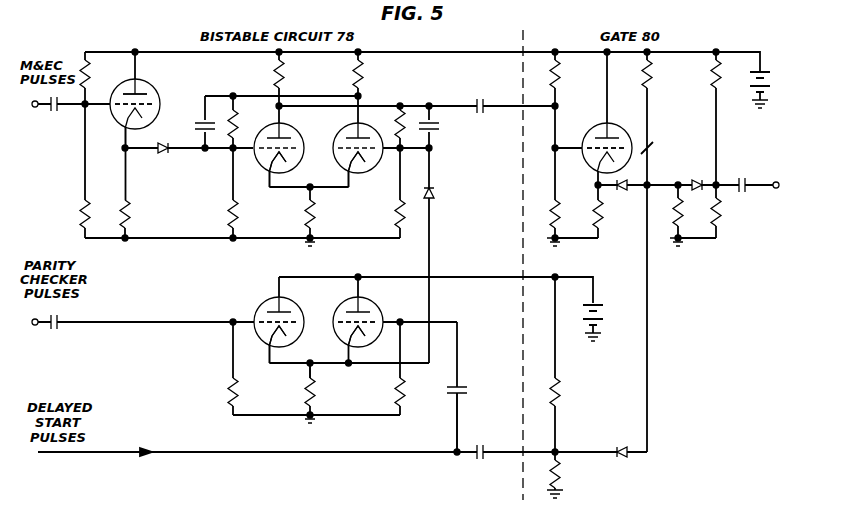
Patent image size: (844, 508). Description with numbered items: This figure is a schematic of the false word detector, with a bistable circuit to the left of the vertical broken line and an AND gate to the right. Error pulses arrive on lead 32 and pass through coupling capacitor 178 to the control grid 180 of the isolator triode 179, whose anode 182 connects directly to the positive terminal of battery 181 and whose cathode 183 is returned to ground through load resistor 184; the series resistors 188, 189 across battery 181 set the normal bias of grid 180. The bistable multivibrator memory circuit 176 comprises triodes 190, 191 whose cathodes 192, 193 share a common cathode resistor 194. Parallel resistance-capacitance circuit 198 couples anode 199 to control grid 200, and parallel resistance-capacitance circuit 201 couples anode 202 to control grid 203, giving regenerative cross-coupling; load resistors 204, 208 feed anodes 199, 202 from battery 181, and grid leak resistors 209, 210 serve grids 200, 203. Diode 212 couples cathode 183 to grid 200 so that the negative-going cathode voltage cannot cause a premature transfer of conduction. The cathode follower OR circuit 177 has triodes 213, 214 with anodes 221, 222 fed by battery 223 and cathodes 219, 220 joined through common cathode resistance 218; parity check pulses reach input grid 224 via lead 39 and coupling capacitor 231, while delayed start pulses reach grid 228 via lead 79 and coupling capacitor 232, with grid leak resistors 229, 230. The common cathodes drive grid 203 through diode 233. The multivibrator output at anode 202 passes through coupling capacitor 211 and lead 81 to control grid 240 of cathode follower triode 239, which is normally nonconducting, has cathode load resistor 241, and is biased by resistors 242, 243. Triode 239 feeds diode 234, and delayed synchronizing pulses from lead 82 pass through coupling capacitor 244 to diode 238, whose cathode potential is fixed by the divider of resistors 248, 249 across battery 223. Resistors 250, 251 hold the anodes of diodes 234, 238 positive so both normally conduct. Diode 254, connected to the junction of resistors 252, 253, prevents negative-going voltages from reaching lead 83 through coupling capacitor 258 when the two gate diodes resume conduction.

The lead 32 is at (40, 108).
The coupling capacitor 178 is at (57, 112).
The resistor 188 is at (90, 72).
The resistor 189 is at (80, 214).
The load resistor 184 is at (131, 214).
The triode 179 is at (158, 94).
The anode 182 is at (138, 84).
The cathode 183 is at (158, 112).
The control grid 180 is at (122, 124).
The diode 212 is at (163, 153).
The parallel resistance-capacitance circuit 198 is at (220, 112).
The anode 202 is at (248, 112).
The load resistor 208 is at (285, 75).
The load resistor 204 is at (364, 71).
The bistable multivibrator memory circuit 176 is at (330, 180).
The triode 190 is at (290, 129).
The triode 191 is at (345, 138).
The cathode 192 is at (268, 189).
The cathode 193 is at (367, 187).
The control grid 200 is at (266, 166).
The control grid 203 is at (364, 165).
The anode 199 is at (395, 120).
The parallel resistance-capacitance circuit 201 is at (430, 94).
The grid leak resistor 209 is at (239, 216).
The common cathode resistor 194 is at (316, 215).
The grid leak resistor 210 is at (394, 222).
The diode 233 is at (435, 195).
The coupling capacitor 211 is at (470, 100).
The lead 81 is at (490, 112).
The lead 39 is at (39, 326).
The coupling capacitor 231 is at (58, 330).
The cathode follower OR circuit 177 is at (331, 298).
The triode 213 is at (266, 304).
The triode 214 is at (364, 304).
The anode 221 is at (262, 318).
The anode 222 is at (342, 306).
The control grid 228 is at (378, 318).
The cathode 219 is at (266, 340).
The control grid 224 is at (296, 361).
The cathode 220 is at (364, 340).
The grid leak resistor 229 is at (227, 392).
The common cathode resistance 218 is at (316, 392).
The grid leak resistor 230 is at (405, 398).
The coupling capacitor 232 is at (464, 385).
The lead 79 is at (78, 455).
The lead 82 is at (468, 457).
The coupling capacitor 244 is at (480, 461).
The resistor 248 is at (561, 392).
The resistor 249 is at (561, 476).
The diode 238 is at (622, 446).
The battery 223 is at (616, 300).
The resistor 242 is at (560, 78).
The resistor 243 is at (548, 208).
The cathode load resistor 241 is at (591, 206).
The diode 234 is at (624, 191).
The triode 239 is at (612, 128).
The control grid 240 is at (590, 134).
The resistor 250 is at (653, 78).
The resistor 252 is at (711, 88).
The diode 254 is at (696, 178).
The coupling capacitor 258 is at (742, 178).
The battery 181 is at (772, 76).
The lead 83 is at (760, 190).
The resistor 253 is at (722, 224).
The resistor 251 is at (672, 228).